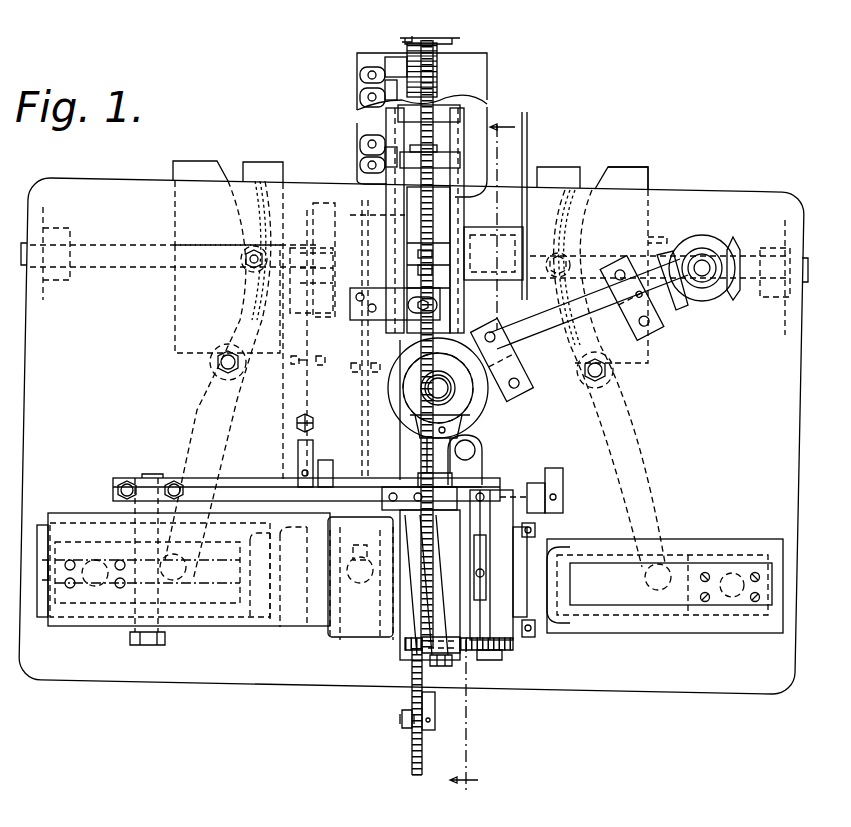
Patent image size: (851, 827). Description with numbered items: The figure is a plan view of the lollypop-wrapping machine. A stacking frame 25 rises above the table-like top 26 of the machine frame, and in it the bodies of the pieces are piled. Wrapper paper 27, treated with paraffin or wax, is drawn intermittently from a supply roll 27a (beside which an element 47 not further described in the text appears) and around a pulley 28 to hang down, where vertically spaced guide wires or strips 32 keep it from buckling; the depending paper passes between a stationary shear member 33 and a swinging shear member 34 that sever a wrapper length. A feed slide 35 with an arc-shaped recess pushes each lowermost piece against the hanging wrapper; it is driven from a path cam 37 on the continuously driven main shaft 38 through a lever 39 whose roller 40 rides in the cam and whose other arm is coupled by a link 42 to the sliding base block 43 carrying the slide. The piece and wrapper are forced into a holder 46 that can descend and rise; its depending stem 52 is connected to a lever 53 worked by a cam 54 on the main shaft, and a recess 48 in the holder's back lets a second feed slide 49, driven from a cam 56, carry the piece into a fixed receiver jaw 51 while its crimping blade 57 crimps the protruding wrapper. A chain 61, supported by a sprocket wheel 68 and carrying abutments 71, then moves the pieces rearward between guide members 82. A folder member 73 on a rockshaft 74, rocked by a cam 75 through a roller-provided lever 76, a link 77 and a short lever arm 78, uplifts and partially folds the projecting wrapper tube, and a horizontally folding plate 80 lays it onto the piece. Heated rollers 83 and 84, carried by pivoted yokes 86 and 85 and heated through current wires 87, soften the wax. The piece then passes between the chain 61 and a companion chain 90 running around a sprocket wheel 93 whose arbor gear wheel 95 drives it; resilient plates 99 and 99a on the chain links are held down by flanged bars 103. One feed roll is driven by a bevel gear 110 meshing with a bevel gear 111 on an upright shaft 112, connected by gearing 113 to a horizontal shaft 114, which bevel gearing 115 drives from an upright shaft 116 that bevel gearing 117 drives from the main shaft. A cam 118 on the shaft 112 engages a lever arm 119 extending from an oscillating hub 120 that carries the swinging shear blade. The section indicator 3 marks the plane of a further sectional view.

The section line 3 is at (482, 455).
The stacking frame 25 is at (548, 537).
The table-like top 26 is at (413, 427).
The wrapper paper 27 is at (174, 570).
The supply roll 27a is at (100, 630).
The pulley 28 is at (455, 665).
The guide wires or strips 32 is at (490, 560).
The stationary shear member 33 is at (475, 478).
The swinging shear member 34 is at (534, 542).
The feed slide 35 is at (671, 584).
The path cam 37 is at (642, 172).
The main shaft 38 is at (90, 267).
The lever 39 is at (625, 468).
The roller 40 is at (566, 262).
The link 42 is at (683, 590).
The sliding base block 43 is at (752, 547).
The holder 46 is at (355, 637).
The bolt 47 is at (160, 610).
The recess 48 is at (330, 553).
The second feed slide 49 is at (268, 620).
The fixed receiver jaw 51 is at (225, 416).
The depending stem 52 is at (362, 583).
The lever 53 is at (365, 335).
The cam 54 is at (400, 213).
The cam 56 is at (185, 318).
The crimping blade 57 is at (305, 622).
The chain 61 is at (412, 670).
The sprocket wheel 68 is at (410, 705).
The abutments 71 is at (410, 776).
The folder member 73 is at (400, 538).
The rockshaft 74 is at (395, 487).
The cam 75 is at (322, 208).
The roller-provided lever 76 is at (308, 383).
The link 77 is at (300, 405).
The short lever arm 78 is at (298, 460).
The horizontally folding plate 80 is at (372, 478).
The guide members 82 is at (452, 214).
The rollers 83 is at (432, 268).
The roller 84 is at (428, 260).
The pivoted yoke 85 is at (400, 233).
The pivoted yoke 86 is at (485, 298).
The current wires 87 is at (528, 138).
The chain 90 is at (437, 52).
The sprocket wheel 93 is at (487, 63).
The gear wheel 95 is at (405, 40).
The resilient flat plate 99 is at (398, 110).
The resilient plate 99a is at (460, 162).
The longitudinally ranging bars 103 is at (390, 180).
The bevel gear 110 is at (478, 408).
The bevel gear 111 is at (462, 420).
The upright shaft 112 is at (455, 392).
The gearing 113 is at (520, 390).
The horizontal shaft 114 is at (538, 345).
The bevel gearing 115 is at (705, 240).
The upright shaft 116 is at (706, 278).
The bevel gearing 117 is at (758, 230).
The cam 118 is at (365, 385).
The lever arm 119 is at (502, 462).
The hub 120 is at (475, 452).